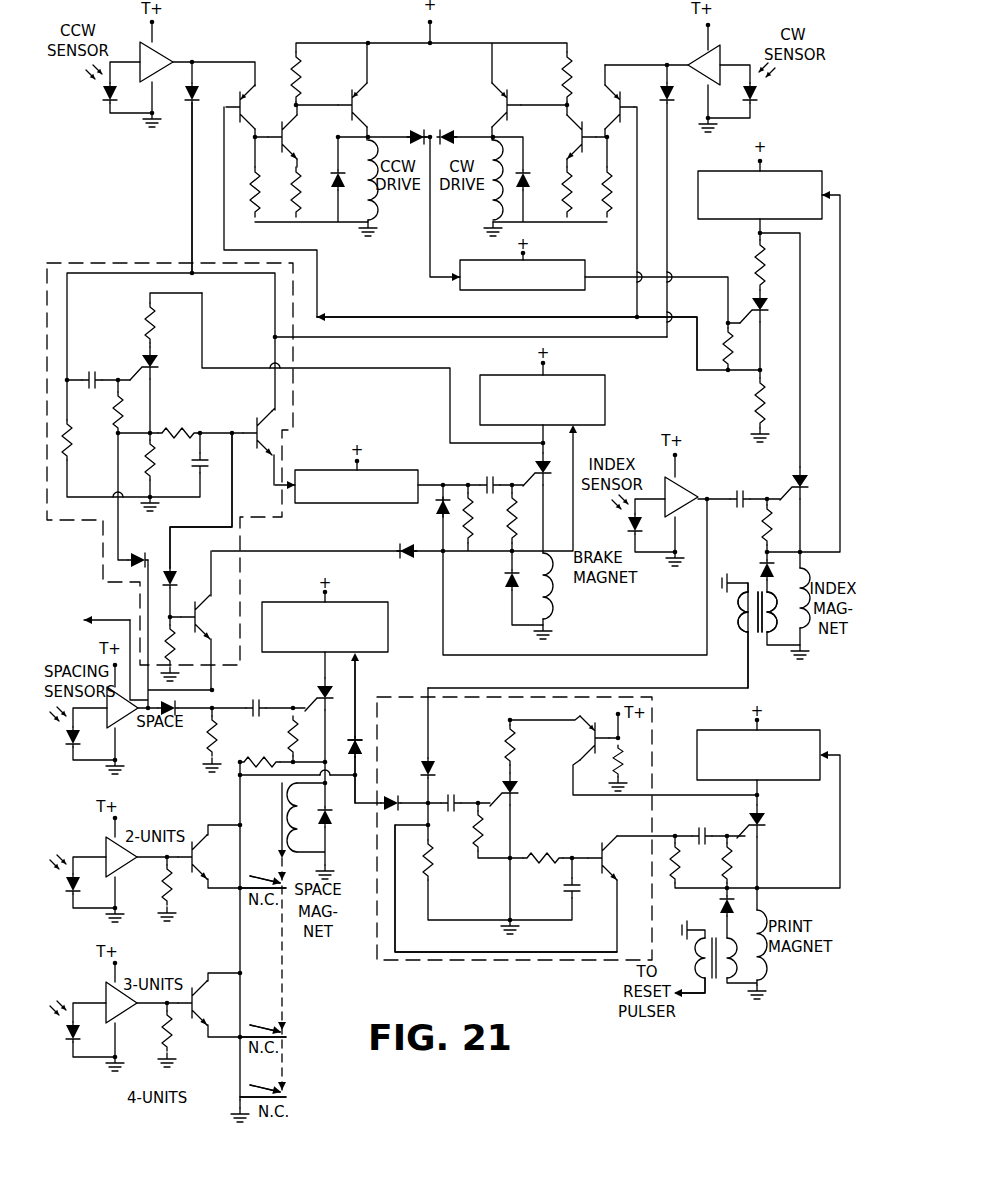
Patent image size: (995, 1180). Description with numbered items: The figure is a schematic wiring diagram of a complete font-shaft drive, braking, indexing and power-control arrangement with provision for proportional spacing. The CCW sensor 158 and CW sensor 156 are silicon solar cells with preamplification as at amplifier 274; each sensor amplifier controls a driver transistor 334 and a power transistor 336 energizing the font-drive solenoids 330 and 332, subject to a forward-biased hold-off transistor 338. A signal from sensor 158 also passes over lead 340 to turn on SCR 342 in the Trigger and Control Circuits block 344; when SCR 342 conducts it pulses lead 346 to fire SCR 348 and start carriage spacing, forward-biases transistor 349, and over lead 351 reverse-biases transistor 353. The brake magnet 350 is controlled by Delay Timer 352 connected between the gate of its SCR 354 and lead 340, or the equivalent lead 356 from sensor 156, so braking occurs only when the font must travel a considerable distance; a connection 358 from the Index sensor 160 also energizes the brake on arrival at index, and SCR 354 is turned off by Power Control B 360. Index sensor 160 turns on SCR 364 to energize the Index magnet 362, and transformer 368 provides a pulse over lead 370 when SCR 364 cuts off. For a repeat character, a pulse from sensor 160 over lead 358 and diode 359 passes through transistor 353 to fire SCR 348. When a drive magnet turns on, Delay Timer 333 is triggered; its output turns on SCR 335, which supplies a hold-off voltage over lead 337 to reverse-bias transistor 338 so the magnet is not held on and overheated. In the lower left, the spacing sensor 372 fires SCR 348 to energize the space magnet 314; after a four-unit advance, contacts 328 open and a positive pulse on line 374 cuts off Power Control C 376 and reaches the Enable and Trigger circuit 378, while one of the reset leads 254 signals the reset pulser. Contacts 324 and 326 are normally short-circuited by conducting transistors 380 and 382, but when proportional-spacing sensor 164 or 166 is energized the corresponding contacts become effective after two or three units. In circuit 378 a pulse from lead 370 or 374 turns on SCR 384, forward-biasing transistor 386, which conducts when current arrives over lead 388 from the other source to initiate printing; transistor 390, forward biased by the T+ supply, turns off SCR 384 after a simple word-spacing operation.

The sensor preamplifier 274 is at (160, 58).
The CCW sensor 158 is at (103, 92).
The lead 340 is at (190, 178).
The hold-off transistor 338 is at (236, 100).
The driver transistor 334 is at (272, 130).
The power transistor 336 is at (348, 100).
The CCW drive magnet 330 is at (378, 204).
The CW drive magnet 332 is at (490, 204).
The CW sensor 156 is at (766, 92).
The delay timer 333 is at (526, 292).
The SCR 335 is at (772, 303).
The lead 337 is at (697, 355).
The Power Control B 360 is at (603, 392).
The SCR 364 is at (790, 480).
The index sensor 160 is at (628, 526).
The index magnet 362 is at (803, 640).
The transformer 368 is at (757, 647).
The lead 358 is at (662, 657).
The SCR 354 is at (531, 476).
The brake magnet 350 is at (555, 599).
The delay timer 352 is at (386, 504).
The diode 359 is at (415, 537).
The lead 356 is at (262, 395).
The Trigger and Control Circuits package 344 is at (148, 262).
The SCR 342 is at (142, 360).
The transistor 349 is at (250, 429).
The lead 351 is at (235, 499).
The lead 346 is at (146, 560).
The transistor 353 is at (201, 617).
The reset leads 254 is at (126, 620).
The spacing sensor 372 is at (70, 745).
The Power Control C 376 is at (357, 606).
The SCR 348 is at (315, 697).
The space magnet 314 is at (280, 810).
The line 374 is at (346, 781).
The contacts 324 is at (280, 882).
The contacts 326 is at (280, 1030).
The contacts 328 is at (238, 1097).
The transistor 380 is at (201, 861).
The proportional spacing sensor 164 is at (70, 895).
The transistor 382 is at (201, 1007).
The proportional spacing sensor 166 is at (70, 1045).
The lead 370 is at (607, 690).
The Enable and Trigger circuit 378 is at (508, 958).
The SCR 384 is at (498, 788).
The transistor 390 is at (588, 741).
The transistor 386 is at (604, 862).
The lead 388 is at (422, 952).